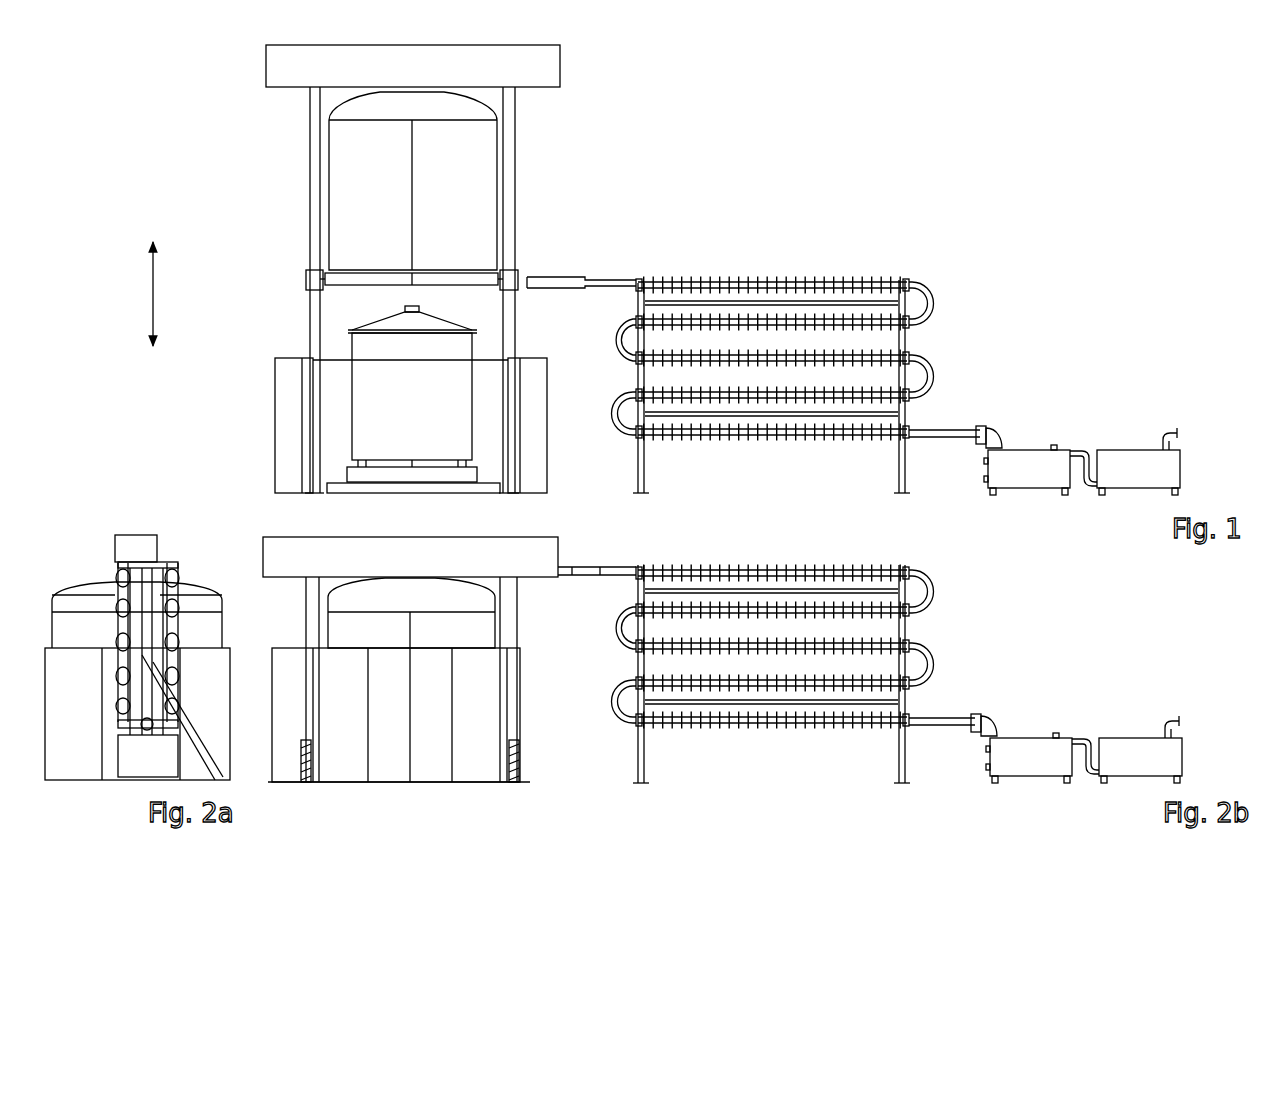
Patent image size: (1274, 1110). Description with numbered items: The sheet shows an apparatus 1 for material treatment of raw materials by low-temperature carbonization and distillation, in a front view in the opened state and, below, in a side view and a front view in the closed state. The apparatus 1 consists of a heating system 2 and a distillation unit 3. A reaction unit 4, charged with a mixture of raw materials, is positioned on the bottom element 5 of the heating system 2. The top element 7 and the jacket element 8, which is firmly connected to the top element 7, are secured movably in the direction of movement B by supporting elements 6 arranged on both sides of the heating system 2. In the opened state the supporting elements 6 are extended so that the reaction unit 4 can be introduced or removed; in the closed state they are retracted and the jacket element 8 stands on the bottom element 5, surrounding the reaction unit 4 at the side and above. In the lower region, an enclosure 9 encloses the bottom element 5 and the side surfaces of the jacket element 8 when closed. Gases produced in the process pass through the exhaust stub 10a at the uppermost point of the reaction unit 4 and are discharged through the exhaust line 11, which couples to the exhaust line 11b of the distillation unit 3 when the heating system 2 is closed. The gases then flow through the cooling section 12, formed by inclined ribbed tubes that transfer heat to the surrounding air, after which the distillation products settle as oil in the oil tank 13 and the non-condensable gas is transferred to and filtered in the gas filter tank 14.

In FIG. 1, the apparatus 1 is at (787, 165).
In FIG. 2A, the apparatus 1 is at (199, 553).
In FIG. 2B, the apparatus 1 is at (1084, 636).
In FIG. 1, the heating system 2 is at (546, 184).
In FIG. 2A, the heating system 2 is at (84, 554).
In FIG. 2B, the heating system 2 is at (583, 536).
In FIG. 1, the distillation unit 3 is at (988, 289).
In FIG. 2B, the distillation unit 3 is at (988, 599).
In FIG. 1, the reaction unit 4 is at (405, 396).
In FIG. 1, the bottom element 5 is at (430, 478).
In FIG. 1, the supporting elements 6 is at (313, 256).
In FIG. 2B, the supporting elements 6 is at (313, 645).
In FIG. 1, the top element 7 is at (405, 84).
In FIG. 2A, the top element 7 is at (144, 541).
In FIG. 2B, the top element 7 is at (403, 571).
In FIG. 1, the jacket element 8 is at (343, 193).
In FIG. 2A, the jacket element 8 is at (92, 633).
In FIG. 2B, the jacket element 8 is at (371, 644).
In FIG. 1, the enclosure 9 is at (290, 389).
In FIG. 2A, the enclosure 9 is at (201, 705).
In FIG. 2B, the enclosure 9 is at (495, 713).
In FIG. 1, the exhaust stub 10a is at (410, 307).
In FIG. 2B, the exhaust line 11 is at (609, 568).
In FIG. 1, the exhaust line of the distillation unit 11b is at (601, 278).
In FIG. 1, the cooling section 12 is at (784, 288).
In FIG. 2A, the cooling section 12 is at (168, 633).
In FIG. 2B, the cooling section 12 is at (790, 568).
In FIG. 1, the oil tank 13 is at (1018, 464).
In FIG. 2B, the oil tank 13 is at (1018, 752).
In FIG. 1, the gas filter tank 14 is at (1108, 464).
In FIG. 2B, the gas filter tank 14 is at (1108, 752).